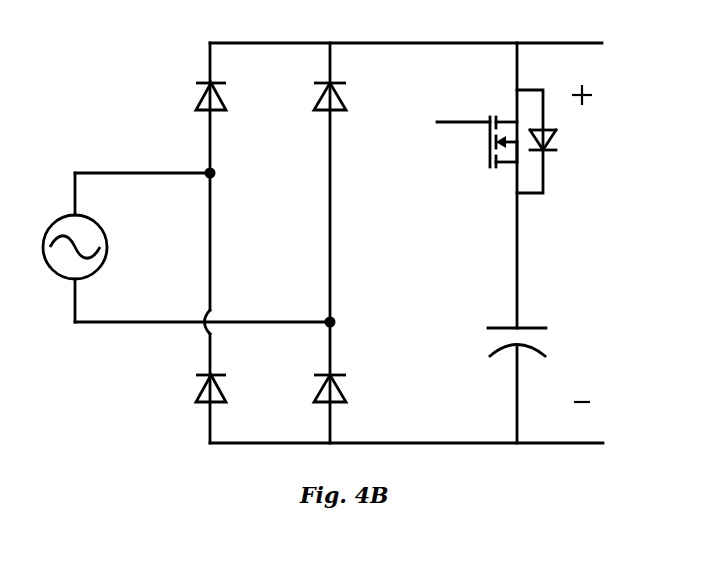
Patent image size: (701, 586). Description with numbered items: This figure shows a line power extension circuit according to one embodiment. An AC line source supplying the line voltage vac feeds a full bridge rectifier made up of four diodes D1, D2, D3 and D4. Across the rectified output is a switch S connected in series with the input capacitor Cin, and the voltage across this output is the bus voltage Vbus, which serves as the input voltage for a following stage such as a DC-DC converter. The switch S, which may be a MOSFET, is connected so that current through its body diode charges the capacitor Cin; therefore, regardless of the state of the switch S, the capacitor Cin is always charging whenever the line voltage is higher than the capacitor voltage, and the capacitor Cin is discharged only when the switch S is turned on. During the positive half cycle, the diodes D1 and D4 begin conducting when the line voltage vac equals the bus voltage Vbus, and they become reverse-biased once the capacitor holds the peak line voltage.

The rectifier diode D1 is at (186, 99).
The rectifier diode D2 is at (303, 99).
The rectifier diode D3 is at (182, 399).
The rectifier diode D4 is at (301, 399).
The AC line voltage vac is at (105, 247).
The switch S is at (496, 152).
The input capacitor Cin is at (485, 328).
The bus voltage Vbus is at (587, 243).